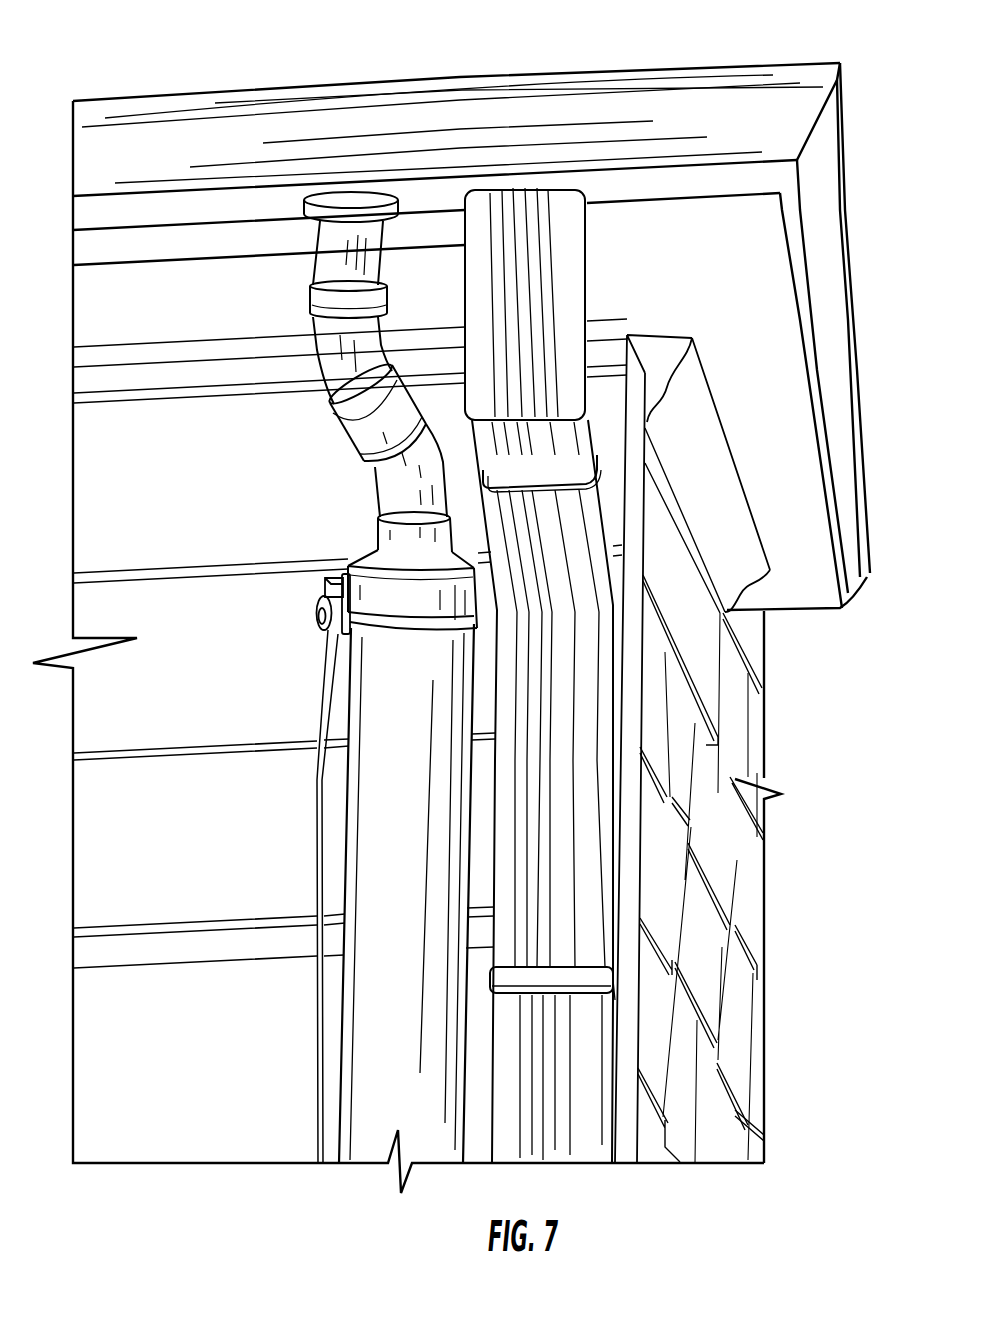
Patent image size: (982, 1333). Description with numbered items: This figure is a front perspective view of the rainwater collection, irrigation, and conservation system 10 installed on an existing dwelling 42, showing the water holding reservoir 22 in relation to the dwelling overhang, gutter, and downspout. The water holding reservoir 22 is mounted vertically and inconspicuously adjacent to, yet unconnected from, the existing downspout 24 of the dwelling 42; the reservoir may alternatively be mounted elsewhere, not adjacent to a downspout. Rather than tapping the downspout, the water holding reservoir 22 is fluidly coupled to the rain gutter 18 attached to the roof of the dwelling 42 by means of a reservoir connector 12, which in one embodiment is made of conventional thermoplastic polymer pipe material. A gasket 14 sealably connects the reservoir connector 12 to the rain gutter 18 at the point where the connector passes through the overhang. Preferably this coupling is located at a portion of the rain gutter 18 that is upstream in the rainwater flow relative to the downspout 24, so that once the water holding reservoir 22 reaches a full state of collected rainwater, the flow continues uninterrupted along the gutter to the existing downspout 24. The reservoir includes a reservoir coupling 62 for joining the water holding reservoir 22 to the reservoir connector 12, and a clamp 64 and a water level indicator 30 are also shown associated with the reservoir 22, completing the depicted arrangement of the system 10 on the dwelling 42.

The rainwater collection, irrigation, and conservation system 10 is at (182, 72).
The reservoir connector 12 is at (340, 363).
The gasket 14 is at (357, 198).
The rain gutter 18 is at (736, 180).
The water holding reservoir 22 is at (380, 822).
The downspout 24 is at (555, 768).
The electrical cable 30 is at (316, 872).
The dwelling 42 is at (745, 1013).
The coupling 62 is at (390, 588).
The clamp 64 is at (320, 602).